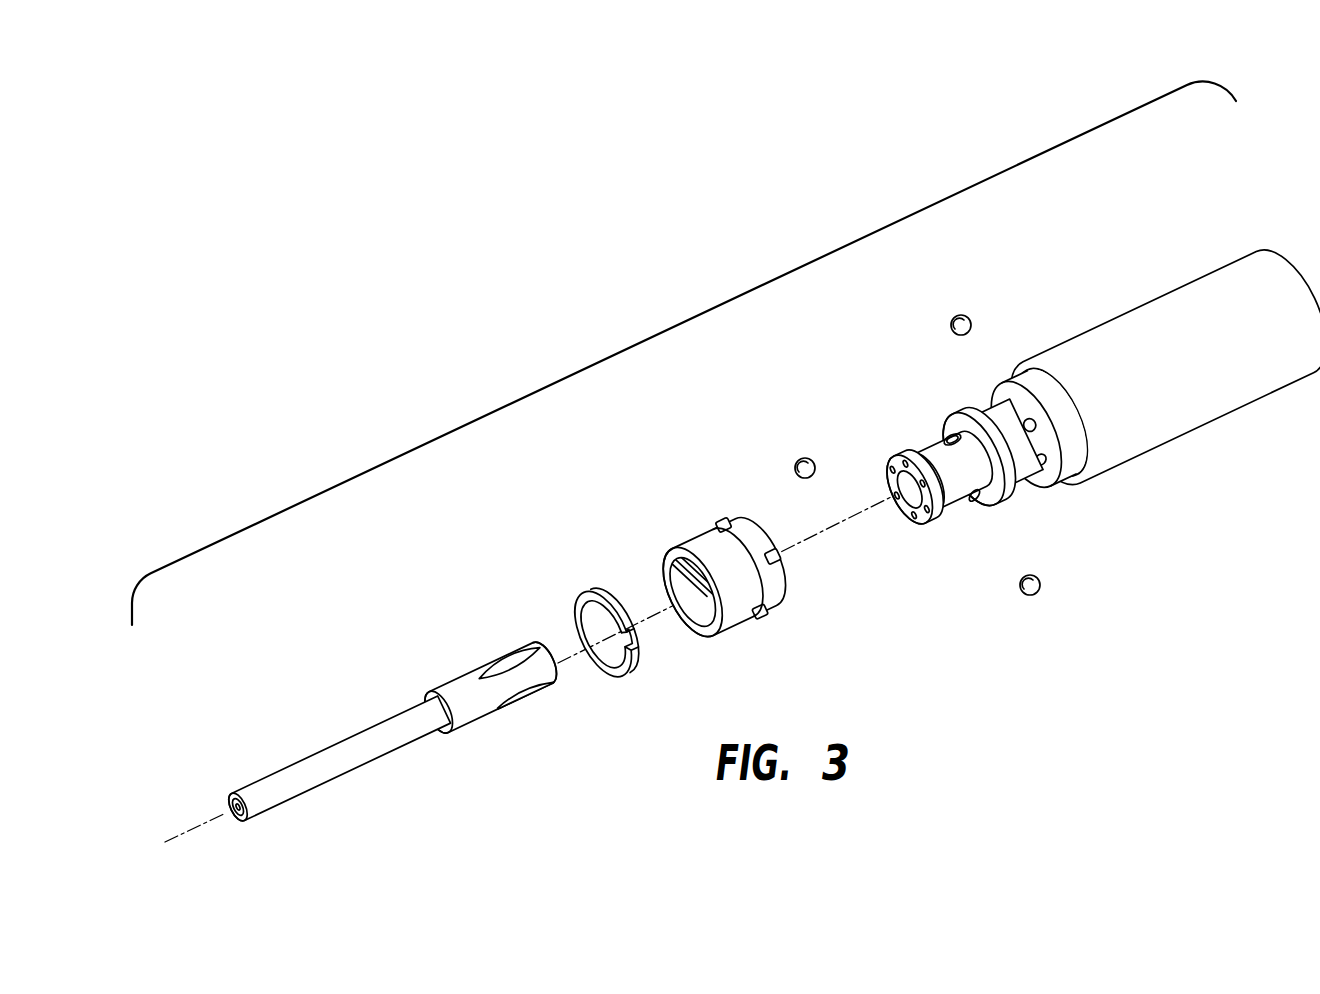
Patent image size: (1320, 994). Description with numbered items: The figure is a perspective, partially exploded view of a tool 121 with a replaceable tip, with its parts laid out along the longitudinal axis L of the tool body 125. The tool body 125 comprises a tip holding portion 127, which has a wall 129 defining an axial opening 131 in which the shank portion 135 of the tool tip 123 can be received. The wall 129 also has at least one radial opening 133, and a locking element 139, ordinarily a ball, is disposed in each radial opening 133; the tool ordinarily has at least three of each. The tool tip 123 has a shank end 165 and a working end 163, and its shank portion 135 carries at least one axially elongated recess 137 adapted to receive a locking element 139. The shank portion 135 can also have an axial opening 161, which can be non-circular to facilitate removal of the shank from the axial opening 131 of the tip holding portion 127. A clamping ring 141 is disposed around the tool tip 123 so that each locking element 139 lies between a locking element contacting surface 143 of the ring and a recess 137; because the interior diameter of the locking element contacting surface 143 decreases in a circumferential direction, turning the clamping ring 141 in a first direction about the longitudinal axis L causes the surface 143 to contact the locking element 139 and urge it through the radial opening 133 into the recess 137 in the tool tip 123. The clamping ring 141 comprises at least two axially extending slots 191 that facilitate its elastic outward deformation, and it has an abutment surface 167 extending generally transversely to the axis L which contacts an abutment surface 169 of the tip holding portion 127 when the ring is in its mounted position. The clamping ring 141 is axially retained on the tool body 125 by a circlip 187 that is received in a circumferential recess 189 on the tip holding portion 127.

The tool 121 is at (665, 327).
The tool tip 123 is at (328, 781).
The tool body 125 is at (1130, 326).
The tip holding portion 127 is at (965, 454).
The wall 129 is at (953, 494).
The axial opening 131 is at (909, 495).
The radial opening 133 is at (950, 433).
The shank portion 135 is at (517, 699).
The recess 137 is at (508, 660).
The locking element 139 is at (961, 315).
The clamping ring 141 is at (741, 594).
The locking element contacting surface 143 is at (685, 612).
The axial opening 161 is at (237, 814).
The working end 163 is at (258, 792).
The shank end 165 is at (560, 674).
The abutment surface 167 is at (775, 596).
The abutment surface 169 is at (936, 426).
The circlip 187 is at (602, 592).
The circumferential recess 189 is at (913, 442).
The axially extending slots 191 is at (727, 530).
The longitudinal axis L is at (178, 832).